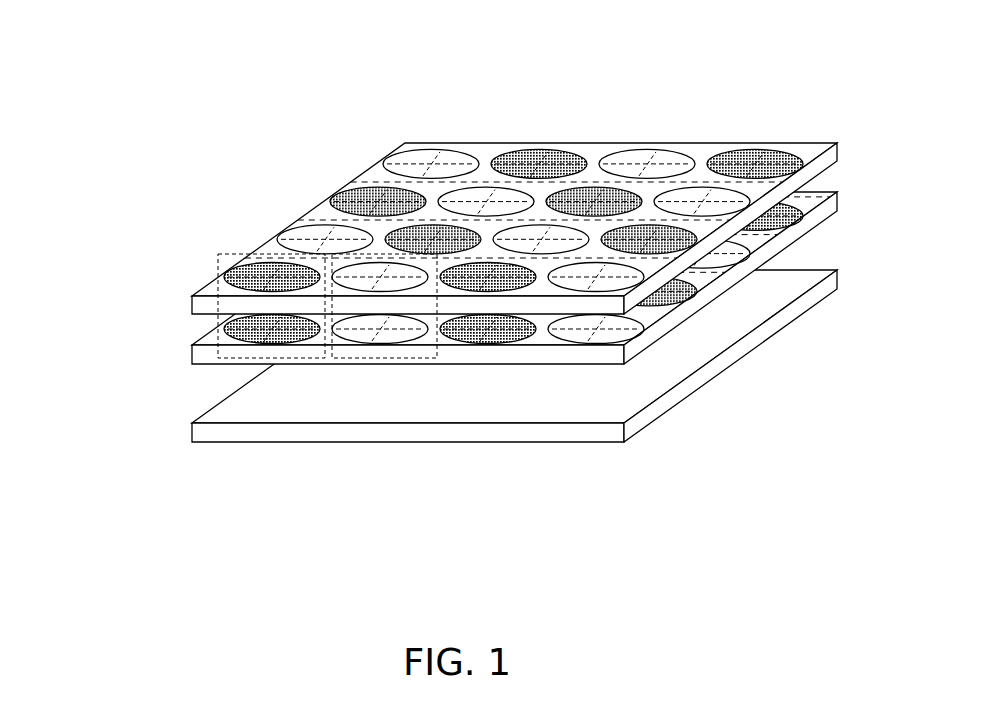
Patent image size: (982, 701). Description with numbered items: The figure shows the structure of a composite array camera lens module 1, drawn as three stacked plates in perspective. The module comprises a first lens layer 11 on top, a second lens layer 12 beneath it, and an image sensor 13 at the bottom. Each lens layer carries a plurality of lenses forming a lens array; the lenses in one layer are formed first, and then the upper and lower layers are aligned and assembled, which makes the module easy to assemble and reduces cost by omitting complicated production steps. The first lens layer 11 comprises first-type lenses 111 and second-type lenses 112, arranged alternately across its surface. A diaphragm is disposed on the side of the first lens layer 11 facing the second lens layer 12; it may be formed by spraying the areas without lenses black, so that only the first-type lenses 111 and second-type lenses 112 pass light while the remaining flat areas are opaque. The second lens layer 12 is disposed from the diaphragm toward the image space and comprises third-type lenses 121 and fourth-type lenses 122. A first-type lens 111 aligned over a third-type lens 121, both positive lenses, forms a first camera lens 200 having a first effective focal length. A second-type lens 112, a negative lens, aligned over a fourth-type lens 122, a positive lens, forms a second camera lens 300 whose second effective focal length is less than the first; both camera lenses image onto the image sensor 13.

The composite array camera lens module 1 is at (245, 106).
The first lens layer 11 is at (487, 199).
The first-type lenses 111 is at (413, 264).
The second-type lenses 112 is at (677, 223).
The second lens layer 12 is at (509, 301).
The third-type lenses 121 is at (557, 339).
The fourth-type lenses 122 is at (703, 286).
The image sensor 13 is at (190, 432).
The first camera lens 200 is at (370, 358).
The second camera lens 300 is at (272, 365).